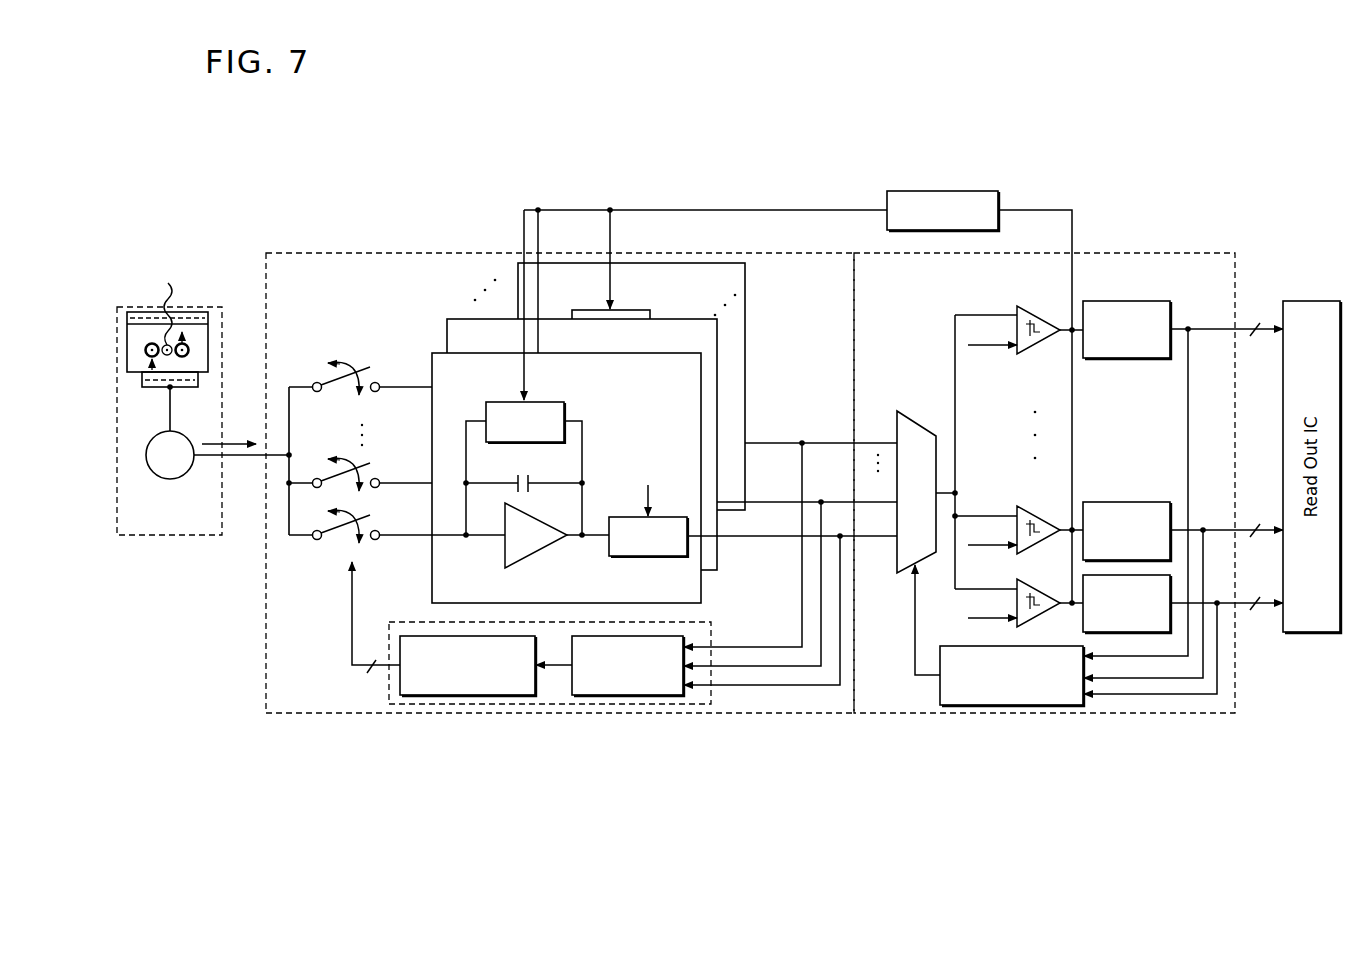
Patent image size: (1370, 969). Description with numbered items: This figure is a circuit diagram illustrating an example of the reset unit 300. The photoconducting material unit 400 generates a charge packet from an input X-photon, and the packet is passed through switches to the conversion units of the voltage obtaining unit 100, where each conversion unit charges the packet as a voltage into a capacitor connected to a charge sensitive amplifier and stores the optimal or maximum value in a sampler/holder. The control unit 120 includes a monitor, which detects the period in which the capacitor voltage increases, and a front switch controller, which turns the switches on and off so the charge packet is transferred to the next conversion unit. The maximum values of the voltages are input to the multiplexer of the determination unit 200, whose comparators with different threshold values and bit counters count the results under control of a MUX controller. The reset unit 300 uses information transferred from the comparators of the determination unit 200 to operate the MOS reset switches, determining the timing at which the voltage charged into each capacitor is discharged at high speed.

The voltage obtaining unit 100 is at (786, 253).
The control unit 120 is at (713, 631).
The determination unit 200 is at (1167, 253).
The reset unit 300 is at (978, 192).
The photoconducting material unit 400 is at (214, 303).